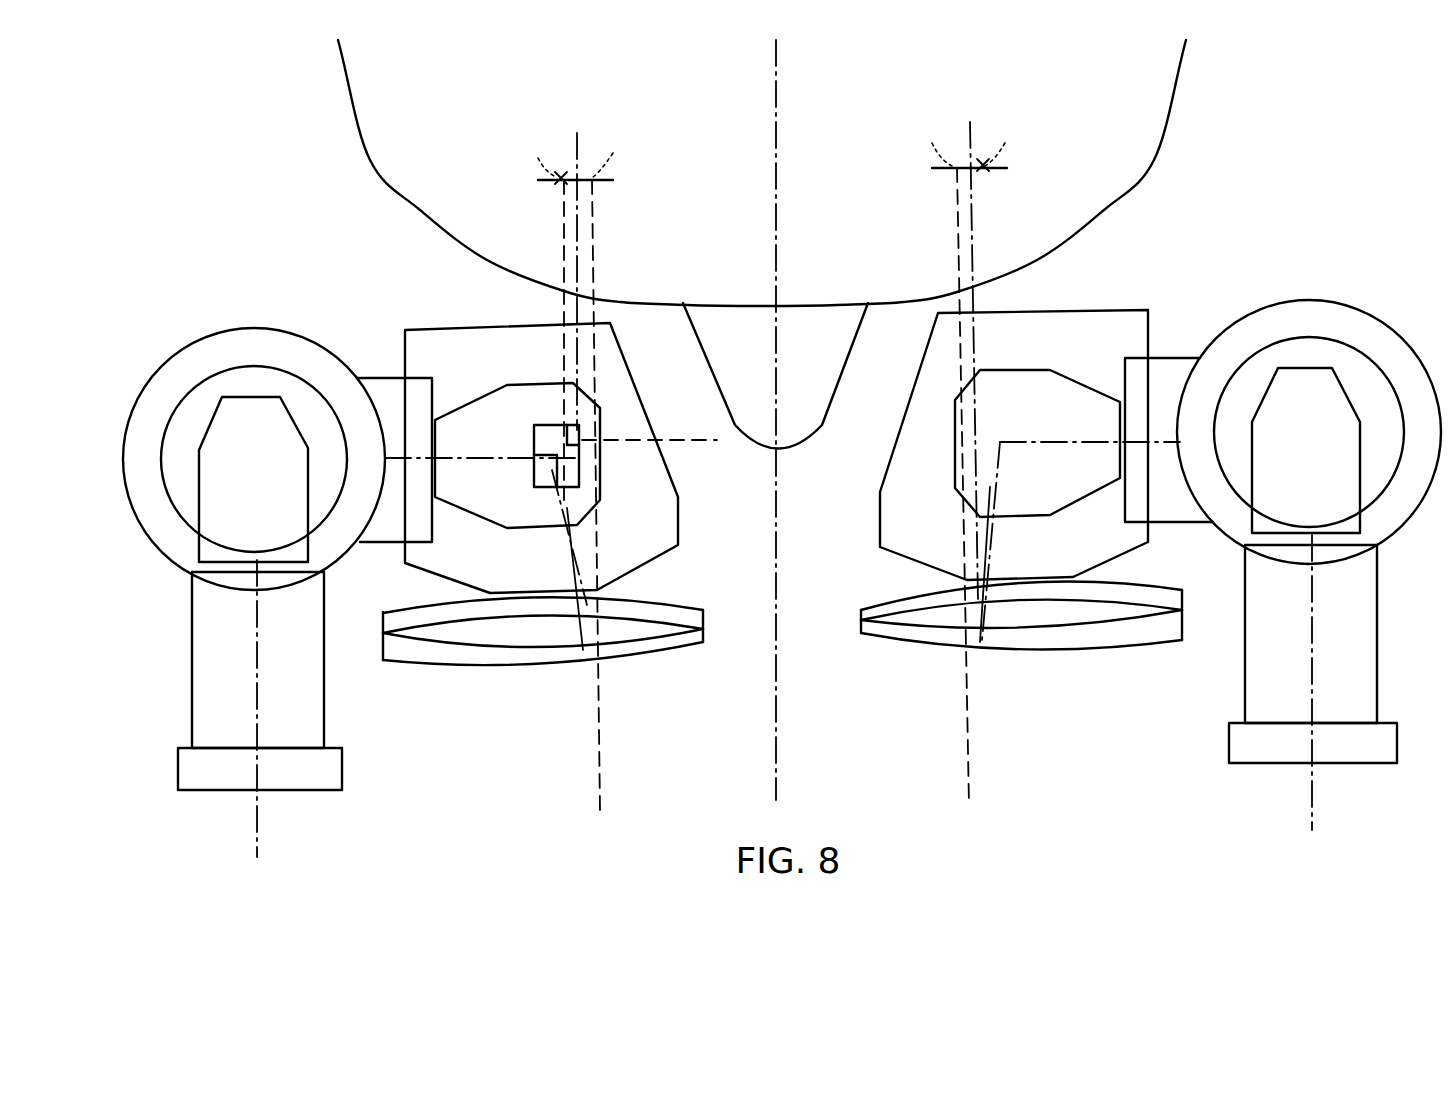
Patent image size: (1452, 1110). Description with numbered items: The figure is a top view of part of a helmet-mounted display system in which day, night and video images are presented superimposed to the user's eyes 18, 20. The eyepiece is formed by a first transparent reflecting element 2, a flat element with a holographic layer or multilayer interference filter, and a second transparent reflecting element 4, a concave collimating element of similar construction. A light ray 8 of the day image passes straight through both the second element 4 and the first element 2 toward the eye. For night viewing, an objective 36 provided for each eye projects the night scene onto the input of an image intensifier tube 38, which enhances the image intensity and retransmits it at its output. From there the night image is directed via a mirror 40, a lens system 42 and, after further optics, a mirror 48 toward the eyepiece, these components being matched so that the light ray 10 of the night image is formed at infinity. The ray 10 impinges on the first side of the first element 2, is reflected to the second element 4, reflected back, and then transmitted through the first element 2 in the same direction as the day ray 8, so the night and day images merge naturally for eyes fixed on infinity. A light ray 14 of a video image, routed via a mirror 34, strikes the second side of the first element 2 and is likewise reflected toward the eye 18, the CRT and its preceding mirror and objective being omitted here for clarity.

The first transparent reflecting element 2 is at (662, 533).
The second transparent reflecting element 4 is at (518, 658).
The light ray of a day image 8 is at (592, 202).
The light ray of a night image 10 is at (578, 272).
The light ray of a video image 14 is at (567, 247).
The eye 18 is at (561, 178).
The eye 20 is at (983, 165).
The mirror 34 is at (555, 427).
The objective 36 is at (328, 773).
The image intensifier tube 38 is at (302, 672).
The mirror 40 is at (1295, 433).
The lens system 42 is at (1287, 323).
The mirror 48 is at (1003, 412).